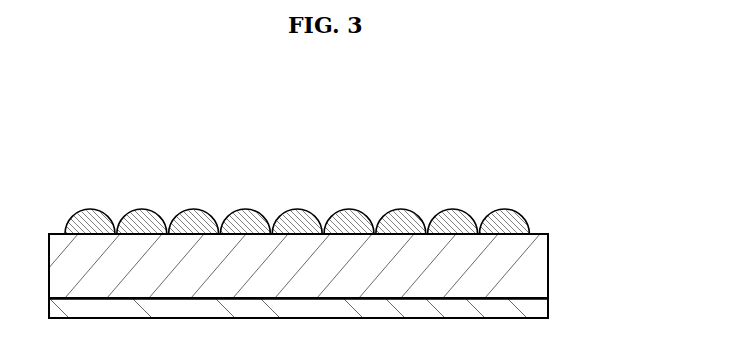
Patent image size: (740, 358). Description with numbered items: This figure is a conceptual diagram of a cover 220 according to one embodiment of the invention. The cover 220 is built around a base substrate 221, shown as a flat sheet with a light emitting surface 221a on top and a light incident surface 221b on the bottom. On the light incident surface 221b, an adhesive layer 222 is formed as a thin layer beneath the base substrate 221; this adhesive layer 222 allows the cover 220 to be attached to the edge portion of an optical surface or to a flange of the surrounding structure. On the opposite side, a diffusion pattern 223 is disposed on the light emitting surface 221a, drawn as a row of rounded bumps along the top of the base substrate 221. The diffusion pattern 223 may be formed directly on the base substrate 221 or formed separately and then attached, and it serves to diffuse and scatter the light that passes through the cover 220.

The cover 220 is at (463, 137).
The base substrate 221 is at (632, 227).
The light emitting surface 221a is at (548, 233).
The light incident surface 221b is at (548, 298).
The adhesive layer 222 is at (548, 307).
The diffusion pattern 223 is at (511, 210).